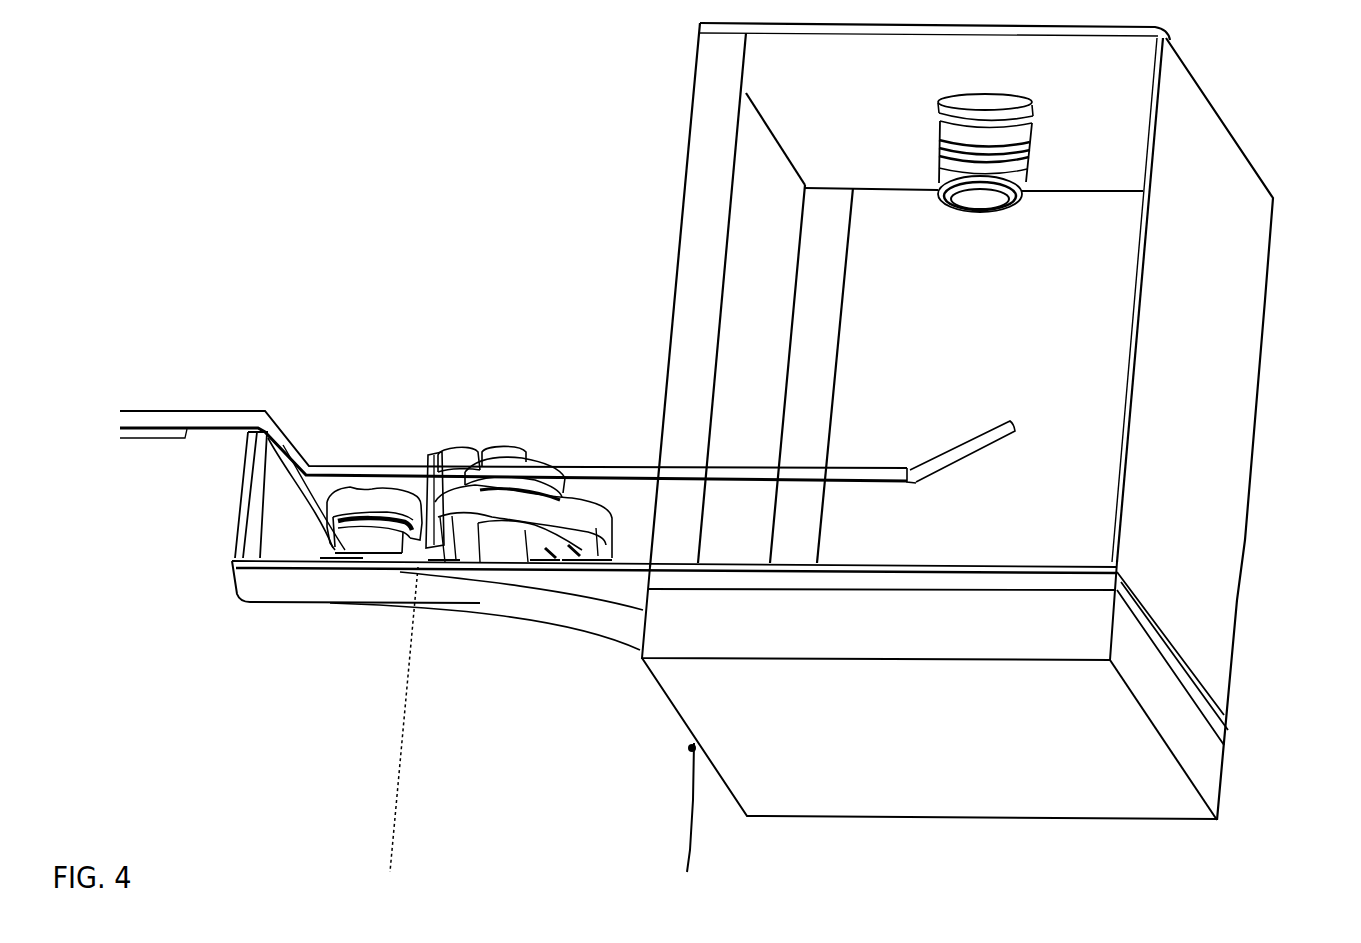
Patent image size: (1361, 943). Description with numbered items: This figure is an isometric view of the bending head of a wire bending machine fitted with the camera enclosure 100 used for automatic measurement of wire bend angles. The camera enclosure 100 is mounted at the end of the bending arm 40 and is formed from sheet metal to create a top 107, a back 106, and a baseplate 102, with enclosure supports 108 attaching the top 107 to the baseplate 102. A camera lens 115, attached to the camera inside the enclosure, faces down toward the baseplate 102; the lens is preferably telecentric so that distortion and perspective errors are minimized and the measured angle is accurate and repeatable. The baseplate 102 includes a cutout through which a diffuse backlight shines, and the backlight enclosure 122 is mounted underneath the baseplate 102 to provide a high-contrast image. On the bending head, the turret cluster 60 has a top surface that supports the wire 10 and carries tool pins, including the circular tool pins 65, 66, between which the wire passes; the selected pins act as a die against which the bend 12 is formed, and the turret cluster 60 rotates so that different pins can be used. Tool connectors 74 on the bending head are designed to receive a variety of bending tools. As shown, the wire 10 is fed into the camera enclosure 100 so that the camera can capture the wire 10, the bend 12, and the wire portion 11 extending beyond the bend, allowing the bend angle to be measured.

The wire 10 is at (750, 465).
The wire portion 11 is at (987, 430).
The bend 12 is at (910, 470).
The bending arm 40 is at (182, 658).
The turret cluster 60 is at (428, 452).
The tool pin 65 is at (506, 448).
The tool pin 66 is at (458, 450).
The tool connectors 74 is at (352, 505).
The camera enclosure 100 is at (1240, 845).
The baseplate 102 is at (603, 588).
The back 106 is at (1227, 388).
The top 107 is at (1084, 178).
The enclosure supports 108 is at (688, 230).
The camera lens 115 is at (984, 212).
The backlight enclosure 122 is at (1025, 822).